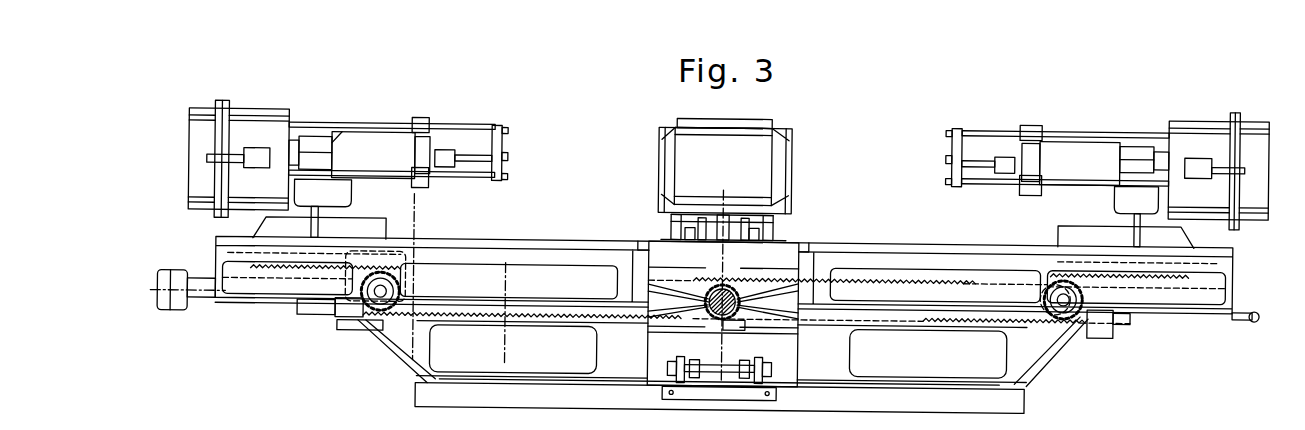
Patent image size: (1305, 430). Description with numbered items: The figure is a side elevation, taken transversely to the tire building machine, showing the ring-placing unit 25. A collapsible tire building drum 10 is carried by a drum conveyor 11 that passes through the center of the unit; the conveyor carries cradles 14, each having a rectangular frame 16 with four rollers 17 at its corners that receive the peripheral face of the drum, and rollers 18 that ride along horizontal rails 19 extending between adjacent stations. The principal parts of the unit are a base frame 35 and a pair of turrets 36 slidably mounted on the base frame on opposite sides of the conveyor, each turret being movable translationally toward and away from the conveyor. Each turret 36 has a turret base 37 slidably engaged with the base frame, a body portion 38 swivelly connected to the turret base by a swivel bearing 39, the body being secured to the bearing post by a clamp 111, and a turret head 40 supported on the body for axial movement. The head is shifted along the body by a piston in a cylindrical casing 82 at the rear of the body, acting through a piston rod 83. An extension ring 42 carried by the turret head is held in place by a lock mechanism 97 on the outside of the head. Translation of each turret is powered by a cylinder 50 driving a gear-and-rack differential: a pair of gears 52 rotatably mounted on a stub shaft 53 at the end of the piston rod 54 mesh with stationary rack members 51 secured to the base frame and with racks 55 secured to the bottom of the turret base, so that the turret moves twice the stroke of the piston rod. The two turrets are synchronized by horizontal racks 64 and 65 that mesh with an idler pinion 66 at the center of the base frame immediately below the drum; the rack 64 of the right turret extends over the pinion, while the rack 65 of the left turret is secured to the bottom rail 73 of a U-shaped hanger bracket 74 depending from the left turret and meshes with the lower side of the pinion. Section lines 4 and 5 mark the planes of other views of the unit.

The section line 4- 4 is at (708, 252).
The section line 5- 5 is at (530, 285).
The tire building drum 10 is at (735, 117).
The drum conveyor 11 is at (708, 250).
The cradle 14 is at (714, 228).
The rectangular frame 16 is at (730, 228).
The rollers 17 is at (676, 227).
The rollers 18 is at (758, 228).
The horizontal rails 19 is at (676, 238).
The ring-placing unit 25 is at (918, 122).
The base frame 35 is at (1023, 370).
The turret 36 is at (478, 204).
The turret base 37 is at (340, 194).
The body portion 38 is at (393, 156).
The swivel bearing 39 is at (322, 192).
The turret head 40 is at (238, 122).
The extension ring 42 is at (205, 122).
The cylinder 50 is at (202, 317).
The stationary rack members 51 is at (521, 309).
The gears 52 is at (402, 296).
The stub shaft 53 is at (1043, 291).
The piston rod 54 is at (340, 322).
The racks 55 is at (246, 269).
The synchronizing rack 64 is at (850, 279).
The synchronizing rack 65 is at (547, 329).
The idler pinion 66 is at (748, 318).
The bottom rail 73 is at (392, 347).
The hanger bracket 74 is at (395, 286).
The cylindrical casing 82 is at (443, 160).
The piston rod 83 is at (468, 163).
The lock mechanism 97 is at (265, 150).
The clamp 111 is at (325, 142).